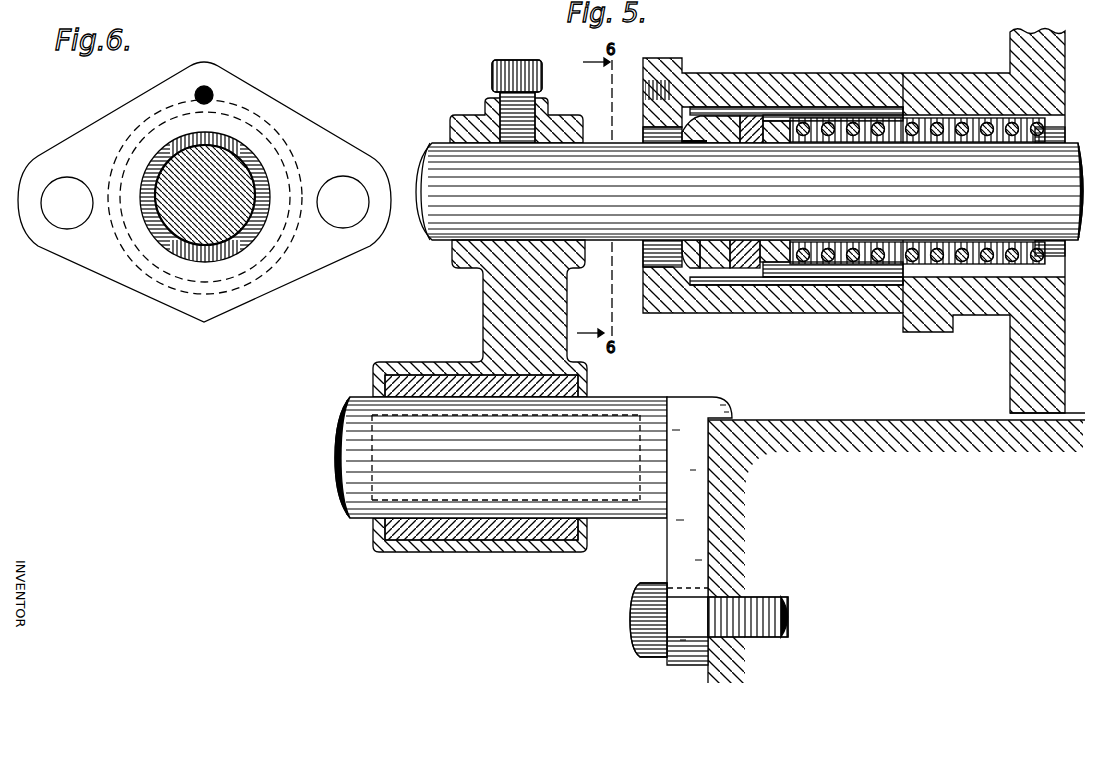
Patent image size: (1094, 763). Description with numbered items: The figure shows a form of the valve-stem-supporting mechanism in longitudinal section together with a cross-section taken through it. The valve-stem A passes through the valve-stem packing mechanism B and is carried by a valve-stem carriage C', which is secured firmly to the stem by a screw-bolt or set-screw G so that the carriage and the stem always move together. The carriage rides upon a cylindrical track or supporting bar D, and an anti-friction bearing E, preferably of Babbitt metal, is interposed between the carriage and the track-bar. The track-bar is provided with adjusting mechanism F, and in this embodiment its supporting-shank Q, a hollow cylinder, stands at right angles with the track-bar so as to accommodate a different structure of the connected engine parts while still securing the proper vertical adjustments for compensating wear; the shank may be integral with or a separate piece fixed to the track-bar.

In FIG. 6, the valve-stem A is at (205, 199).
In FIG. 5, the valve-stem A is at (749, 191).
In FIG. 5, the valve-stem packing mechanism B is at (716, 143).
In FIG. 5, the valve-stem carriage or support C' is at (480, 396).
In FIG. 5, the track or supporting bar D is at (508, 450).
In FIG. 5, the anti-friction bearing E is at (412, 380).
In FIG. 5, the adjusting mechanism F is at (660, 656).
In FIG. 5, the screw-bolt or set-screw G is at (498, 81).
In FIG. 5, the supporting-shank Q is at (667, 552).